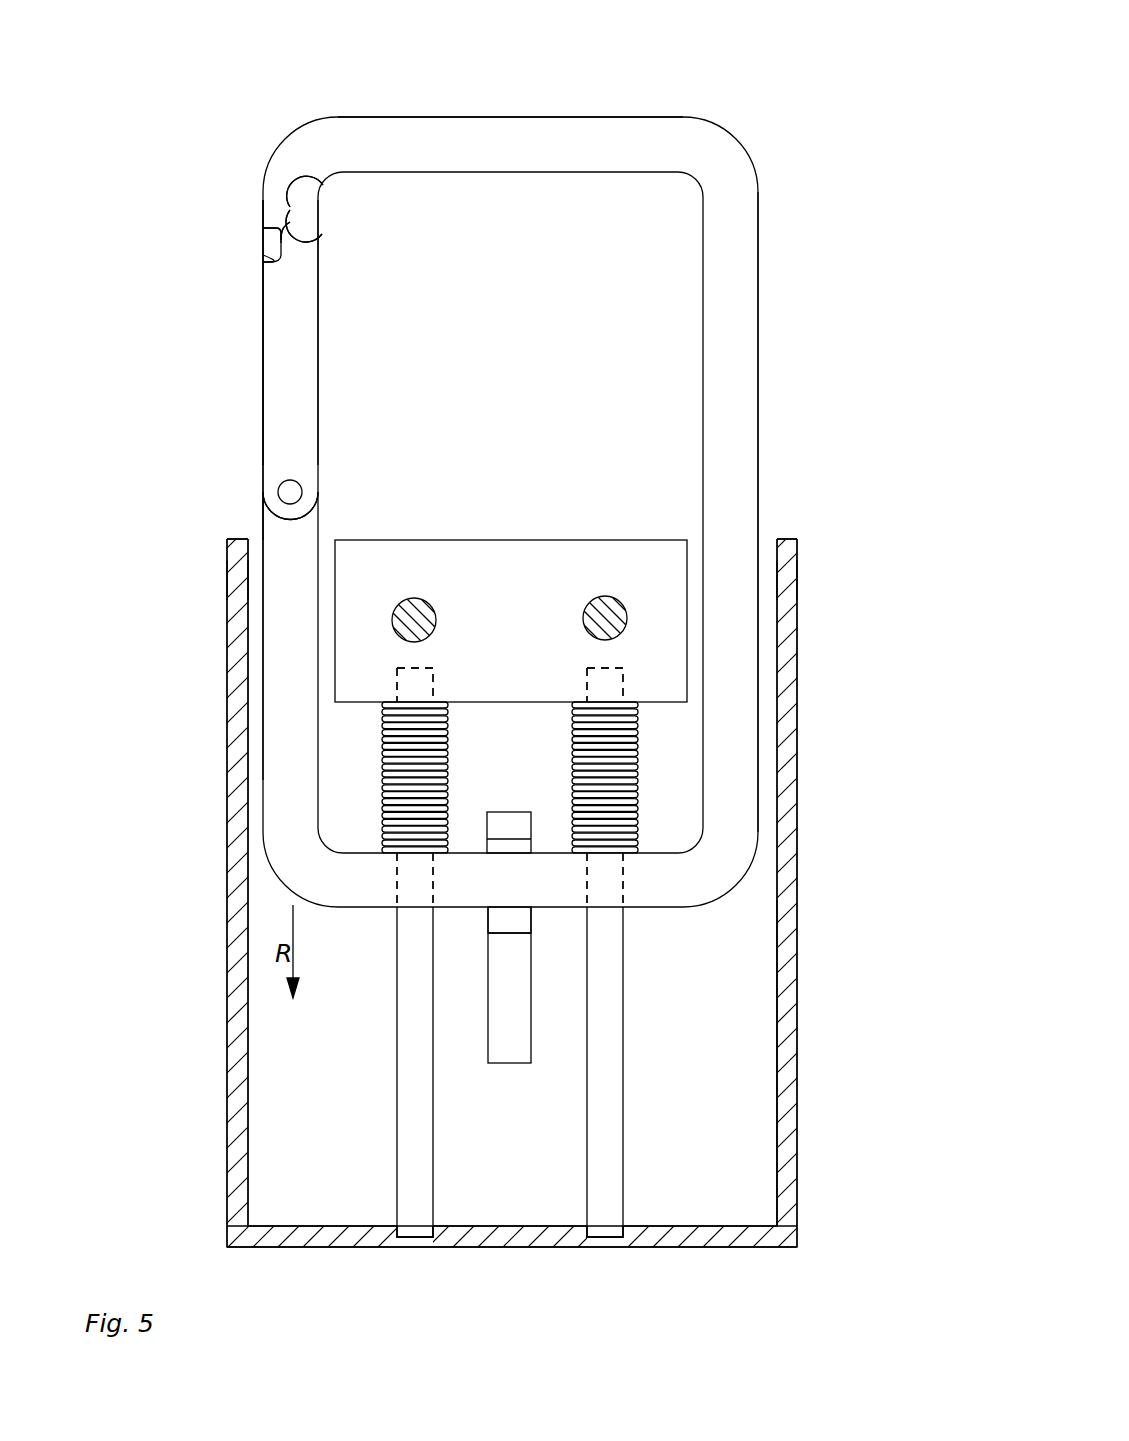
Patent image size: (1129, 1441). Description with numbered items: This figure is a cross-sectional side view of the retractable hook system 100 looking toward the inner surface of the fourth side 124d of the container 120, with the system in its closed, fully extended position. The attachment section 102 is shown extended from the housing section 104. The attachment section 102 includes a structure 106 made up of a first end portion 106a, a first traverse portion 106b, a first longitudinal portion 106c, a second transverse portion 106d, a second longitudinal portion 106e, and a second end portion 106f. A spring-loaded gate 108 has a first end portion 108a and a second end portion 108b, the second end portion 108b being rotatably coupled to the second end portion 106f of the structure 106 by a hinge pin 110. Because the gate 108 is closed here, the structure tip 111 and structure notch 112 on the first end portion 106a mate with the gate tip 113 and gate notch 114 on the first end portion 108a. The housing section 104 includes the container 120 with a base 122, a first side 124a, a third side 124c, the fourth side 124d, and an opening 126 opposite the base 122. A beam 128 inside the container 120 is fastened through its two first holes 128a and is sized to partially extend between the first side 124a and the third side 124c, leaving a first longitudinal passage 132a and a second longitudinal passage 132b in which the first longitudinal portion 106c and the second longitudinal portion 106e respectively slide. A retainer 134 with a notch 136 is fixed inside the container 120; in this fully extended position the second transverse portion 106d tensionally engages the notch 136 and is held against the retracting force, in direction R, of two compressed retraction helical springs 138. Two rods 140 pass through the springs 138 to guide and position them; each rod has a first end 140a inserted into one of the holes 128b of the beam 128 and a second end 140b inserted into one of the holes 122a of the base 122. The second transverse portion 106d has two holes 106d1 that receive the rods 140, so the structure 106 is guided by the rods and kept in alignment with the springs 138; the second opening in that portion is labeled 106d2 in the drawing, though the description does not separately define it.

The retractable hook system 100 is at (832, 53).
The attachment section 102 is at (195, 336).
The housing section 104 is at (833, 1183).
The structure 106 is at (595, 140).
The first end portion 106a is at (263, 214).
The first traverse portion 106b is at (466, 117).
The first longitudinal portion 106c is at (758, 327).
The second transverse portion 106d is at (478, 886).
The holes 106d1 is at (625, 878).
The handle bottom portion opening 106d2 is at (397, 880).
The second longitudinal portion 106e is at (263, 670).
The second end portion 106f is at (263, 520).
The spring-loaded gate 108 is at (263, 377).
The first end portion 108a is at (263, 282).
The second end portion 108b is at (263, 462).
The hinge pin 110 is at (290, 492).
The structure tip 111 is at (263, 260).
The structure notch 112 is at (322, 234).
The gate tip 113 is at (323, 185).
The gate notch 114 is at (263, 238).
The container 120 is at (235, 835).
The base 122 is at (510, 1247).
The holes 122a is at (397, 1226).
The first side 124a is at (797, 945).
The third side 124c is at (235, 940).
The fourth side 124d is at (730, 1030).
The opening 126 is at (620, 382).
The beam 128 is at (625, 555).
The first holes 128a is at (410, 603).
The holes 128b is at (397, 685).
The first longitudinal passage 132a is at (765, 592).
The second longitudinal passage 132b is at (255, 578).
The retainer 134 is at (507, 1063).
The notch 136 is at (533, 910).
The retraction helical springs 138 is at (462, 727).
The rods 140 is at (397, 1061).
The first end 140a is at (433, 686).
The second end 140b is at (408, 1250).